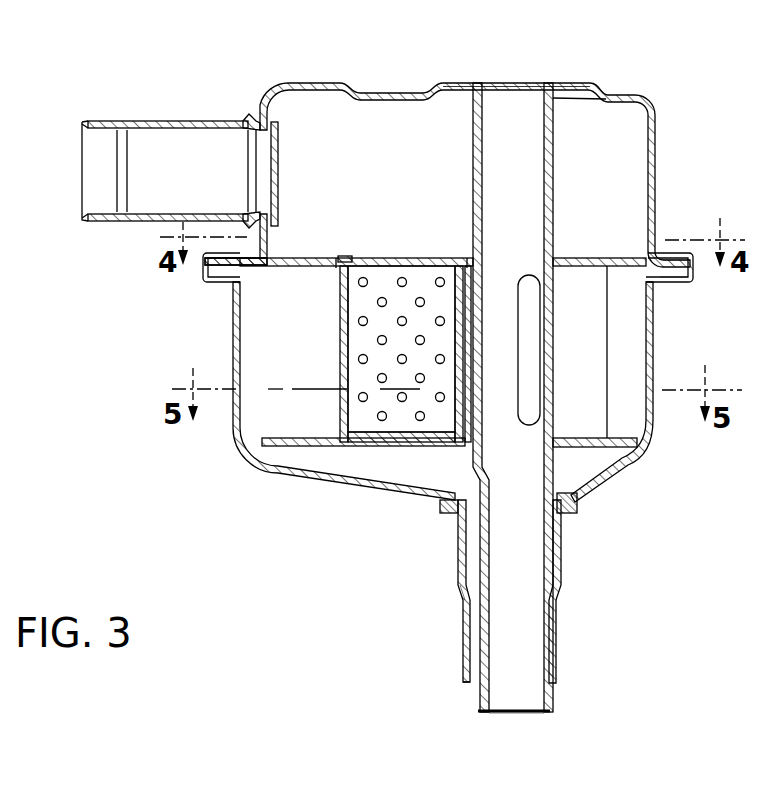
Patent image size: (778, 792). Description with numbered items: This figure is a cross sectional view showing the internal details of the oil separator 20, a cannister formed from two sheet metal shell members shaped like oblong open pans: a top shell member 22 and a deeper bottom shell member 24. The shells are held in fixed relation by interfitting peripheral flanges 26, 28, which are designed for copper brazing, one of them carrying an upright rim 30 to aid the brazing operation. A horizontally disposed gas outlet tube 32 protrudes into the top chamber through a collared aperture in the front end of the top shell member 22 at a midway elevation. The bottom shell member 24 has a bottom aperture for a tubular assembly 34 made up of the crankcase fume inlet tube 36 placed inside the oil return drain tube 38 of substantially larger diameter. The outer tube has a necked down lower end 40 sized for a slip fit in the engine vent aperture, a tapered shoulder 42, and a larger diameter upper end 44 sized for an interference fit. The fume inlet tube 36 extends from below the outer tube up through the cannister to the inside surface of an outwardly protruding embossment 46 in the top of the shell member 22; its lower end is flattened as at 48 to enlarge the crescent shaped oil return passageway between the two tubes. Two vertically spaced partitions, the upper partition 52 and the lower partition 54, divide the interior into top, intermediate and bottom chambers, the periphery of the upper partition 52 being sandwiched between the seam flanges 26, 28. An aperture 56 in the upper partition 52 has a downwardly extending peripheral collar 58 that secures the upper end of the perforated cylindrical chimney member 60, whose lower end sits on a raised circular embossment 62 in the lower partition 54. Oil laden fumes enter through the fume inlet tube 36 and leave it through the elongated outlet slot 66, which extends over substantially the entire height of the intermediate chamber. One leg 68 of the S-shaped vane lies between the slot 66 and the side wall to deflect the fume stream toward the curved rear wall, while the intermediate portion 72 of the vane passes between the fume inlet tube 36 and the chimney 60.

The oil separator 20 is at (421, 286).
The top shell member 22 is at (318, 84).
The bottom shell member 24 is at (233, 321).
The peripheral flange 26 is at (672, 258).
The peripheral flange 28 is at (672, 276).
The upright rim 30 is at (693, 268).
The gas outlet tube 32 is at (183, 120).
The tubular assembly 34 is at (509, 613).
The fume inlet tube 36 is at (505, 722).
The oil return drain tube 38 is at (471, 680).
The necked down lower end 40 is at (557, 666).
The tapered shoulder 42 is at (458, 584).
The larger diameter upper end 44 is at (458, 552).
The embossment 46 is at (565, 84).
The flattened portion 48 is at (513, 397).
The upper partition 52 is at (313, 254).
The lower partition 54 is at (307, 438).
The aperture 56 is at (358, 264).
The peripheral collar 58 is at (401, 266).
The chimney member 60 is at (402, 348).
The raised circular embossment 62 is at (412, 442).
The elongated outlet slot 66 is at (523, 306).
The leg of vane member 68 is at (592, 356).
The intermediate portion of vane member 72 is at (468, 343).